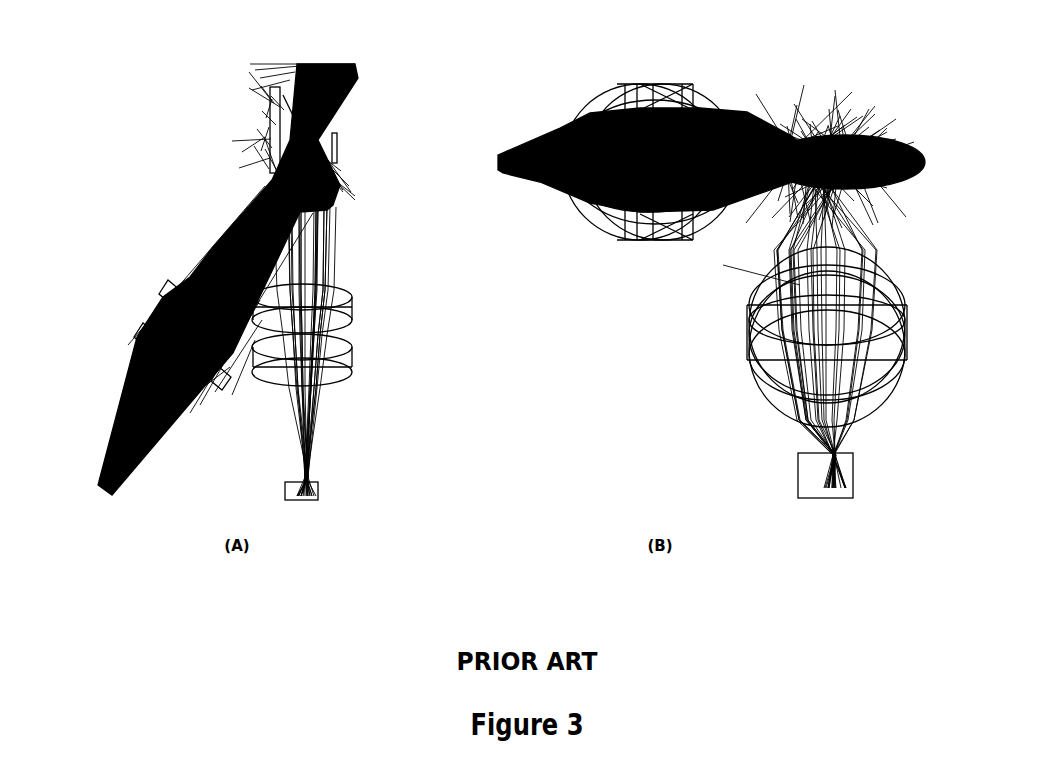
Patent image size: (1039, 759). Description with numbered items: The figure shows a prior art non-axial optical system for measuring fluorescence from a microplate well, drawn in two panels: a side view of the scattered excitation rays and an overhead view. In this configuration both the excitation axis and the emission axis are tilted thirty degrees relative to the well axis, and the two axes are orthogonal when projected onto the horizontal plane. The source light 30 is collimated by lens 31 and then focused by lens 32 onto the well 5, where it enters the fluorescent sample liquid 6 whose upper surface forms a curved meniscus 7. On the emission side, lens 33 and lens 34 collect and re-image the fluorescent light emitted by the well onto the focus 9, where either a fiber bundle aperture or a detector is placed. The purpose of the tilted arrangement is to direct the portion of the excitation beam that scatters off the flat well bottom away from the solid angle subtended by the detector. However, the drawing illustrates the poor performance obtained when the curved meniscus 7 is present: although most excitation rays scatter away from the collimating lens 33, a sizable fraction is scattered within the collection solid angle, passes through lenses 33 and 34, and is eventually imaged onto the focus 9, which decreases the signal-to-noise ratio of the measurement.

The microplate well 5 is at (338, 140).
The fluorescent sample liquid 6 is at (272, 143).
The meniscus 7 is at (290, 110).
The focus 9 is at (320, 492).
The source light 30 is at (113, 440).
The lens 31 is at (140, 330).
The lens 32 is at (165, 282).
The collimating lens 33 is at (352, 307).
The lens 34 is at (352, 358).